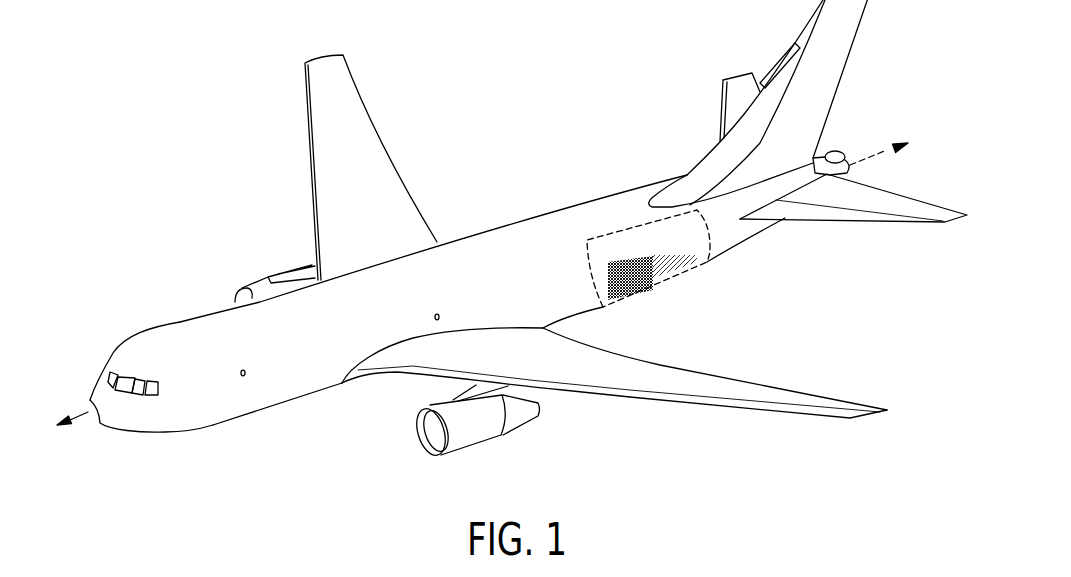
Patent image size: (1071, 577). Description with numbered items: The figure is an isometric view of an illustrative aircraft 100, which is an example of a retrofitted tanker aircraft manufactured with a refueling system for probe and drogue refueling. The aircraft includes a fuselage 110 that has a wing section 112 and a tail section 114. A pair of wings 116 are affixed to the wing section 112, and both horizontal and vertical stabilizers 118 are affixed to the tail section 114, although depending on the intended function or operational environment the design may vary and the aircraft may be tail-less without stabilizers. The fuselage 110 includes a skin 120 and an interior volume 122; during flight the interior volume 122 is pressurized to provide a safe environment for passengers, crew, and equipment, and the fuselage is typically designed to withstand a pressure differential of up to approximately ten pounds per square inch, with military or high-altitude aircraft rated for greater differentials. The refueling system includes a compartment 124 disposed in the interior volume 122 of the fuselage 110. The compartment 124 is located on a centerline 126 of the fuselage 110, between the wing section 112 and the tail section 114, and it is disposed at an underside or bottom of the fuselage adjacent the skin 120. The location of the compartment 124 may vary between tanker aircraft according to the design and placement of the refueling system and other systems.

The aircraft 100 is at (207, 119).
The fuselage 110 is at (503, 243).
The wing section 112 is at (286, 236).
The tail section 114 is at (790, 242).
The wings 116 is at (650, 380).
The horizontal and vertical stabilizers 118 is at (832, 68).
The skin 120 is at (583, 200).
The interior volume 122 is at (203, 415).
The compartment 124 is at (657, 283).
The centerline 126 is at (88, 423).